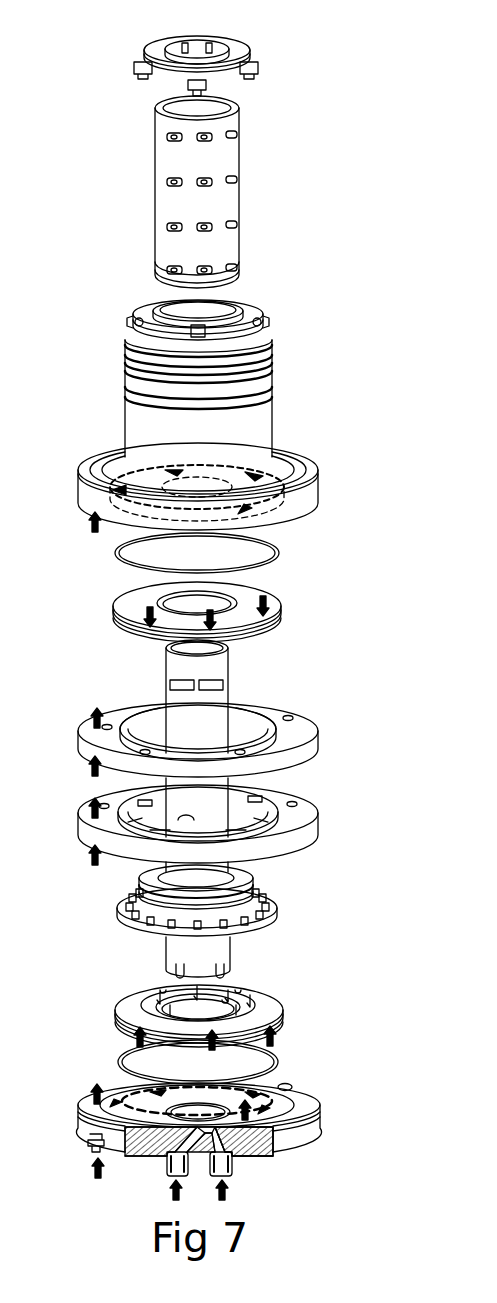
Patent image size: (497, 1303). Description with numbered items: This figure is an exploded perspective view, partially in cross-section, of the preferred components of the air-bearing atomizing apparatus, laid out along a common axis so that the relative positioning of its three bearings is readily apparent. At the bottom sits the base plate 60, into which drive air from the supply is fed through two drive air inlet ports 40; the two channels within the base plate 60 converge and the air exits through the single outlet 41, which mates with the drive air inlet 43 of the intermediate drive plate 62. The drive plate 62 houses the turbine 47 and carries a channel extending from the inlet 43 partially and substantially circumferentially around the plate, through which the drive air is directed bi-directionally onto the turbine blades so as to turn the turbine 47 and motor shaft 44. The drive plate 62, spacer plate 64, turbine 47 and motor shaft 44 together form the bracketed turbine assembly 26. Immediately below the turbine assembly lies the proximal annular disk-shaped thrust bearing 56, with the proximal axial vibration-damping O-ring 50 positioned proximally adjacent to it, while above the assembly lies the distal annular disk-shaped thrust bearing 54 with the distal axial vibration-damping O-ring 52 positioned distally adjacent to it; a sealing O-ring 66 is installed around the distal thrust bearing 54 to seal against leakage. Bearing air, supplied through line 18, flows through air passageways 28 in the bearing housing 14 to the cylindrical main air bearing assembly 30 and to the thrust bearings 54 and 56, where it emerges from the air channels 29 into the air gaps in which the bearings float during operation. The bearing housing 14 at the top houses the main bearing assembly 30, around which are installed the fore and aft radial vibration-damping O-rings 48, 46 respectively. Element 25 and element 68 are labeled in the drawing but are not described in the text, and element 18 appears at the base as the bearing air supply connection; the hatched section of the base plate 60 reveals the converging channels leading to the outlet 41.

The bearing housing 14 is at (300, 452).
The line 18 is at (92, 1152).
The base 25 is at (300, 1096).
The turbine assembly 26 is at (385, 700).
The air passageways 28 is at (180, 139).
The air channels 29 is at (223, 1000).
The cylindrical main bearing assembly 30 is at (242, 208).
The drive air inlet ports 40 is at (167, 1177).
The single outlet 41 is at (208, 1128).
The drive air inlet 43 is at (185, 817).
The motor shaft 44 is at (208, 815).
The aft radial vibration damping O-ring 46 is at (238, 112).
The turbine 47 is at (275, 909).
The fore radial vibration damping O-ring 48 is at (225, 290).
The proximal thrust bearing axial vibration-damping O-ring 50 is at (278, 1065).
The distal thrust bearing axial vibration-damping O-ring 52 is at (285, 545).
The distal thrust bearing 54 is at (270, 600).
The proximal thrust bearing 56 is at (270, 1003).
The base plate 60 is at (310, 1130).
The drive plate 62 is at (305, 798).
The spacer plate 64 is at (308, 731).
The sealing O-ring 66 is at (270, 617).
The gasket 68 is at (265, 1022).